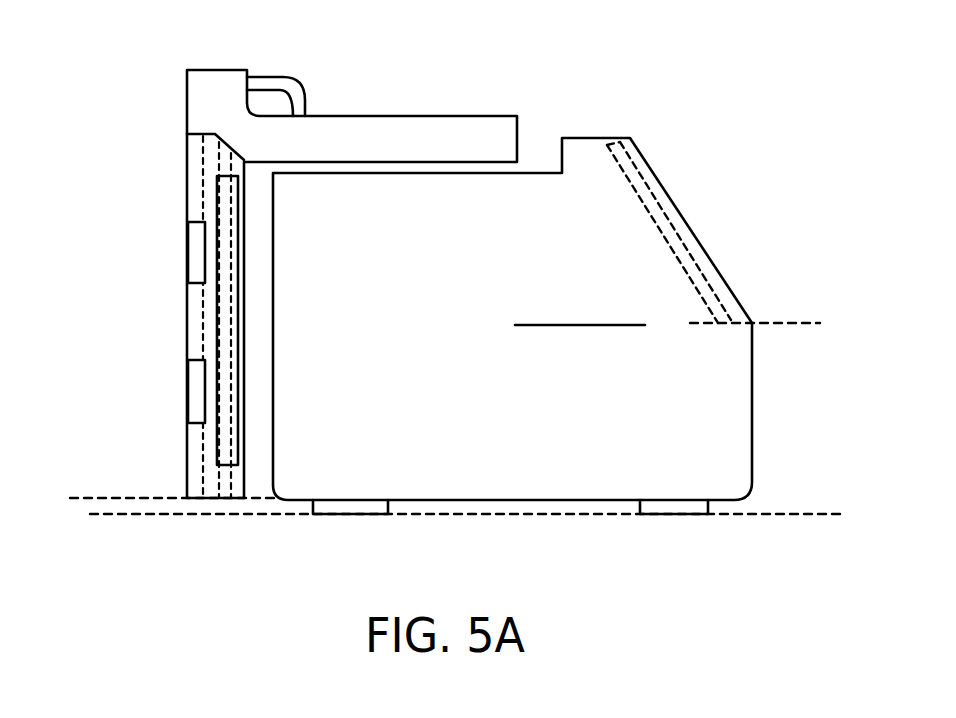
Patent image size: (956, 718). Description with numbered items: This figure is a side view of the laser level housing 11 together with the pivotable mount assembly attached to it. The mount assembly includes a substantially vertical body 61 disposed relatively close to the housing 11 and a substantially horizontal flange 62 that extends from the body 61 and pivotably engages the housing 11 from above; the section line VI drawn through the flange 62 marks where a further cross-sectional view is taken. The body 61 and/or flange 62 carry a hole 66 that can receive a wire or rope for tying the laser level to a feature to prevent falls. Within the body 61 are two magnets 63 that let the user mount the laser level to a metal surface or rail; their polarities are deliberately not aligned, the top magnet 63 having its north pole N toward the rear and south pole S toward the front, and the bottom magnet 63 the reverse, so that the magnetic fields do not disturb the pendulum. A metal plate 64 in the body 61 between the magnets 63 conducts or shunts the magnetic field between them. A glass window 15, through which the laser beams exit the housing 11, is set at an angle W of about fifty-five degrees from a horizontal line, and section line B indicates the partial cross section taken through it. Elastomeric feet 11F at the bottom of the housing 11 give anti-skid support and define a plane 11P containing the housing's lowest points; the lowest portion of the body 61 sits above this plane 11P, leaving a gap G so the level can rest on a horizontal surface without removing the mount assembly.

The housing 11 is at (740, 412).
The feet 11F is at (350, 508).
The plane containing the lowest points of housing 11P is at (797, 518).
The window 15 is at (648, 163).
The body 61 is at (202, 164).
The flange 62 is at (380, 118).
The magnet 63 is at (185, 273).
The metal plate 64 is at (228, 318).
The hole 66 is at (268, 75).
The gap G is at (108, 445).
The angle W is at (565, 312).
The north pole N is at (187, 232).
The south pole S is at (205, 252).
The section line B- B is at (745, 197).
The section line VI is at (442, 225).